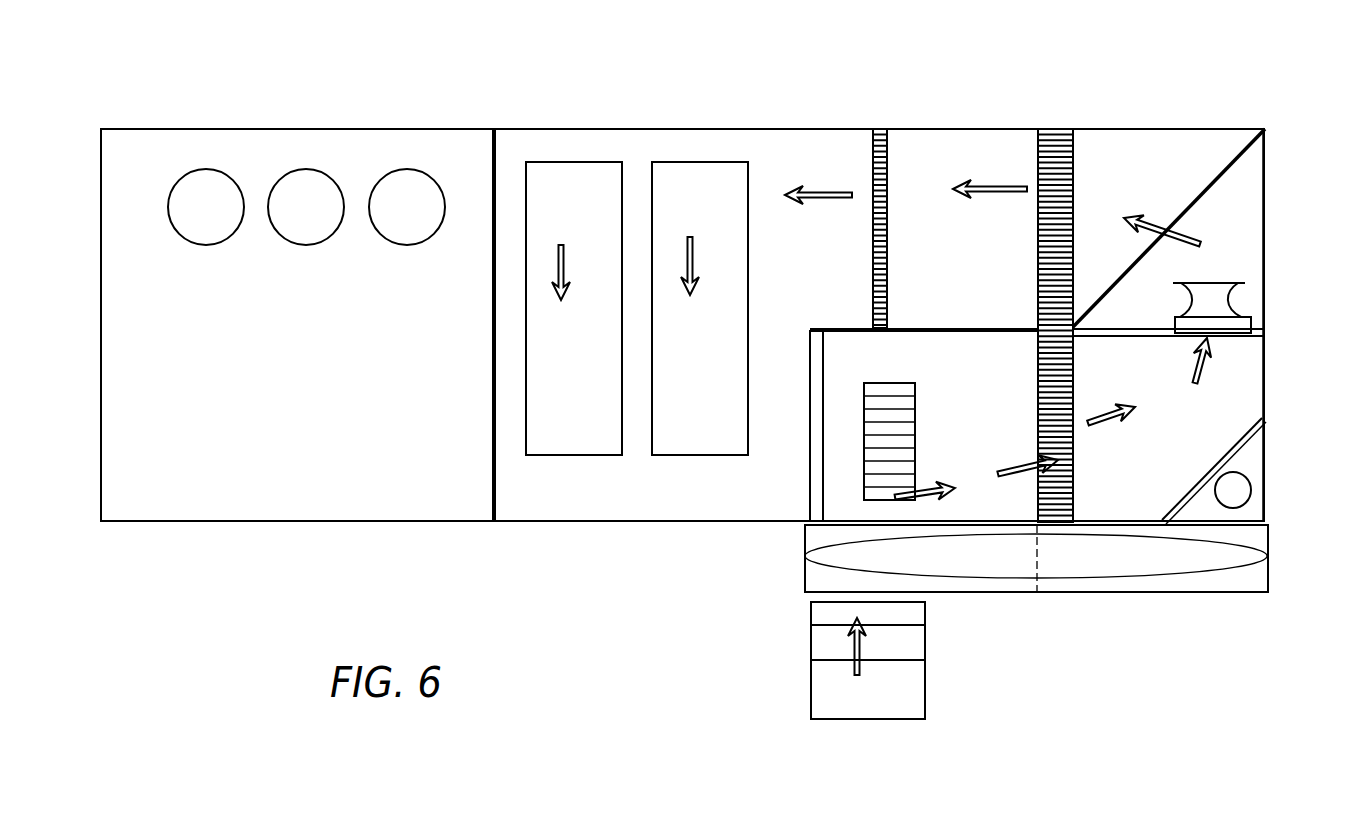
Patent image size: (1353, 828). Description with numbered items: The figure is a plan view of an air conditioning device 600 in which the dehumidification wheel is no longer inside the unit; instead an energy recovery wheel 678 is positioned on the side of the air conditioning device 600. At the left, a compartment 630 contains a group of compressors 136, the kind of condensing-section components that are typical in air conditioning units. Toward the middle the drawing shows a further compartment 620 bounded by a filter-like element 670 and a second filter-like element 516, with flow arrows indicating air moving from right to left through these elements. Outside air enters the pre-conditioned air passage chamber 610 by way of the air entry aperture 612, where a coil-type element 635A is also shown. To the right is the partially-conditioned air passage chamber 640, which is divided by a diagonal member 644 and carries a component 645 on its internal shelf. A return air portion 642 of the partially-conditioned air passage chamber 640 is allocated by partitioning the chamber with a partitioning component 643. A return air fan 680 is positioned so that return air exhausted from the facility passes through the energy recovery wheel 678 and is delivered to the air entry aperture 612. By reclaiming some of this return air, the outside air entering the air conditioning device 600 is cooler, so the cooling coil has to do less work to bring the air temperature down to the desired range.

The air conditioning device 600 is at (216, 100).
The supply compartment 630 is at (258, 491).
The compressor 136 is at (407, 178).
The filter 670 is at (888, 133).
The intermediate compartment 620 is at (957, 228).
The filter 516 is at (1060, 158).
The pre-conditioned air passage chamber 610 is at (1036, 425).
The heat exchanger 635A is at (887, 443).
The partially-conditioned air passage chamber 640 is at (1168, 325).
The diagonal baffle 644 is at (1233, 163).
The spool 645 is at (1225, 310).
The partitioning component 643 is at (1263, 428).
The return air fan 680 is at (1240, 492).
The return air portion 642 is at (1036, 551).
The energy recovery wheel 678 is at (833, 563).
The air entry aperture 612 is at (826, 606).